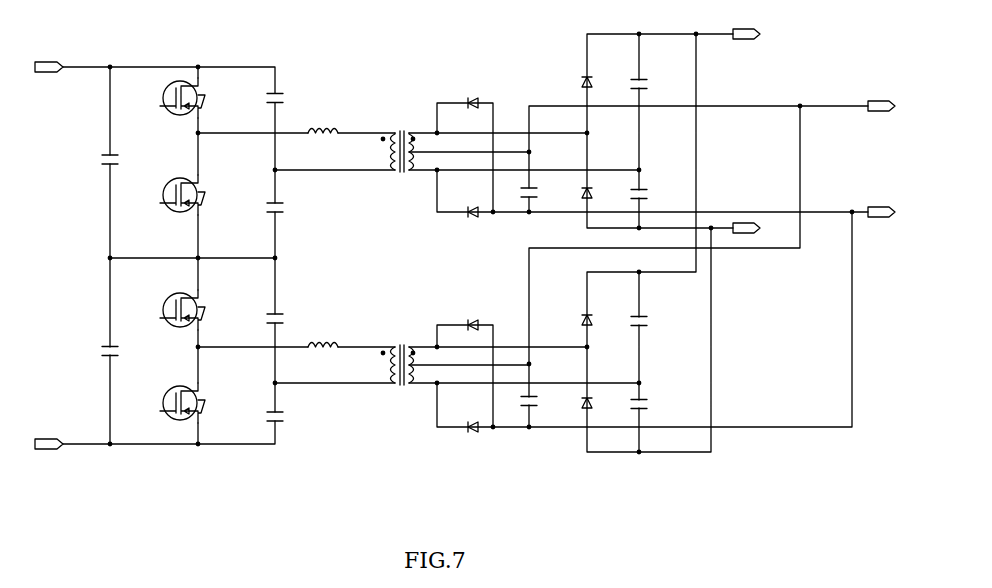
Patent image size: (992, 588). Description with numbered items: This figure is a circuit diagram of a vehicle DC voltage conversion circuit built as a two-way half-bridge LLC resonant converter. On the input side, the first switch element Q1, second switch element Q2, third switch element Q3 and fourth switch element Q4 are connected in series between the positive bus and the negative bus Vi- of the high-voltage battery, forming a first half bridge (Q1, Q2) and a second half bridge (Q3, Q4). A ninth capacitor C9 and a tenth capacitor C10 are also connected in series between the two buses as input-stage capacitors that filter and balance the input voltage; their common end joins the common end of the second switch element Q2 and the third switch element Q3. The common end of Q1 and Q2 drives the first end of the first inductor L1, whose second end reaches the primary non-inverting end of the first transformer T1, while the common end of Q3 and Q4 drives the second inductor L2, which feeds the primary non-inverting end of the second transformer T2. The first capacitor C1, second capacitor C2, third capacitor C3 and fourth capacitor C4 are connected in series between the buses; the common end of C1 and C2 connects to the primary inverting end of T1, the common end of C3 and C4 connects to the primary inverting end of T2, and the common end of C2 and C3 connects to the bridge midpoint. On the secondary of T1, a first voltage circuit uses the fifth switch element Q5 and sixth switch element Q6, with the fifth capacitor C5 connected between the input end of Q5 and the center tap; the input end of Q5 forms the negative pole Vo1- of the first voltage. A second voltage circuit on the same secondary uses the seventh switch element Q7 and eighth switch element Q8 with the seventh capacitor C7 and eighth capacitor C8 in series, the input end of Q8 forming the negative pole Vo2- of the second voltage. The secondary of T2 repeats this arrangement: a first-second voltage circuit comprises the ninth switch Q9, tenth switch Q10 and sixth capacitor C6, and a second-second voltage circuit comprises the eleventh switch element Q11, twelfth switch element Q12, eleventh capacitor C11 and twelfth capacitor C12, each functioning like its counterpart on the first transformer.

The first switch element Q1 is at (172, 98).
The second switch element Q2 is at (172, 195).
The third switch element Q3 is at (172, 310).
The fourth switch element Q4 is at (172, 403).
The fifth switch element Q5 is at (472, 97).
The sixth switch element Q6 is at (472, 206).
The seventh switch element Q7 is at (598, 83).
The eighth switch element Q8 is at (598, 194).
The ninth switch Q9 is at (472, 319).
The tenth switch Q10 is at (472, 421).
The eleventh switch element Q11 is at (601, 321).
The twelfth switch element Q12 is at (601, 404).
The first capacitor C1 is at (261, 101).
The second capacitor C2 is at (261, 208).
The third capacitor C3 is at (261, 319).
The fourth capacitor C4 is at (261, 418).
The fifth capacitor C5 is at (540, 192).
The sixth capacitor C6 is at (539, 401).
The seventh capacitor C7 is at (650, 84).
The eighth capacitor C8 is at (650, 194).
The ninth capacitor C9 is at (100, 160).
The tenth capacitor C10 is at (91, 350).
The eleventh capacitor C11 is at (653, 321).
The twelfth capacitor C12 is at (653, 404).
The first inductor L1 is at (323, 124).
The second inductor L2 is at (323, 338).
The first transformer T1 is at (402, 144).
The second transformer T2 is at (402, 357).
The negative bus Vi- is at (38, 444).
The negative pole of the first voltage Vo1- is at (900, 213).
The negative pole of the second voltage Vo2- is at (766, 229).